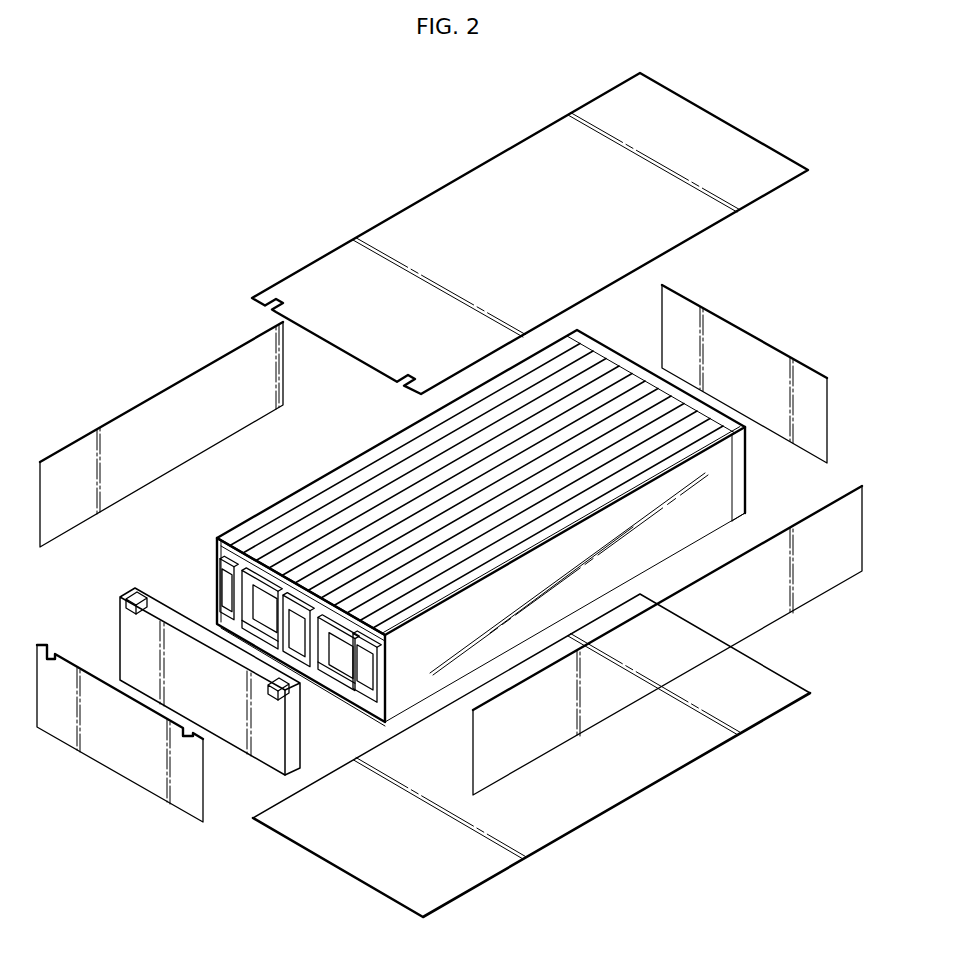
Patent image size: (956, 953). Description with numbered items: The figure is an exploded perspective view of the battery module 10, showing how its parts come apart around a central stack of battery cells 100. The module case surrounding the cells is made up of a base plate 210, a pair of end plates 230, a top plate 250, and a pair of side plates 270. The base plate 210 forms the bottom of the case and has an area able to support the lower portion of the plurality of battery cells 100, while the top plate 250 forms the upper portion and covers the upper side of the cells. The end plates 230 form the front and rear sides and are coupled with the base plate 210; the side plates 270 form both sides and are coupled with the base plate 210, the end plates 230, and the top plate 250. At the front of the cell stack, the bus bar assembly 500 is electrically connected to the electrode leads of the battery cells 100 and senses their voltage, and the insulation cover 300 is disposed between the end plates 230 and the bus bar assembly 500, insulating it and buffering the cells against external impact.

The battery module 10 is at (449, 495).
The battery cell 100 is at (317, 495).
The base plate 210 is at (353, 858).
The end plate 230 is at (753, 337).
The top plate 250 is at (432, 212).
The side plate 270 is at (760, 610).
The insulation cover 300 is at (132, 588).
The bus bar assembly 500 is at (269, 604).